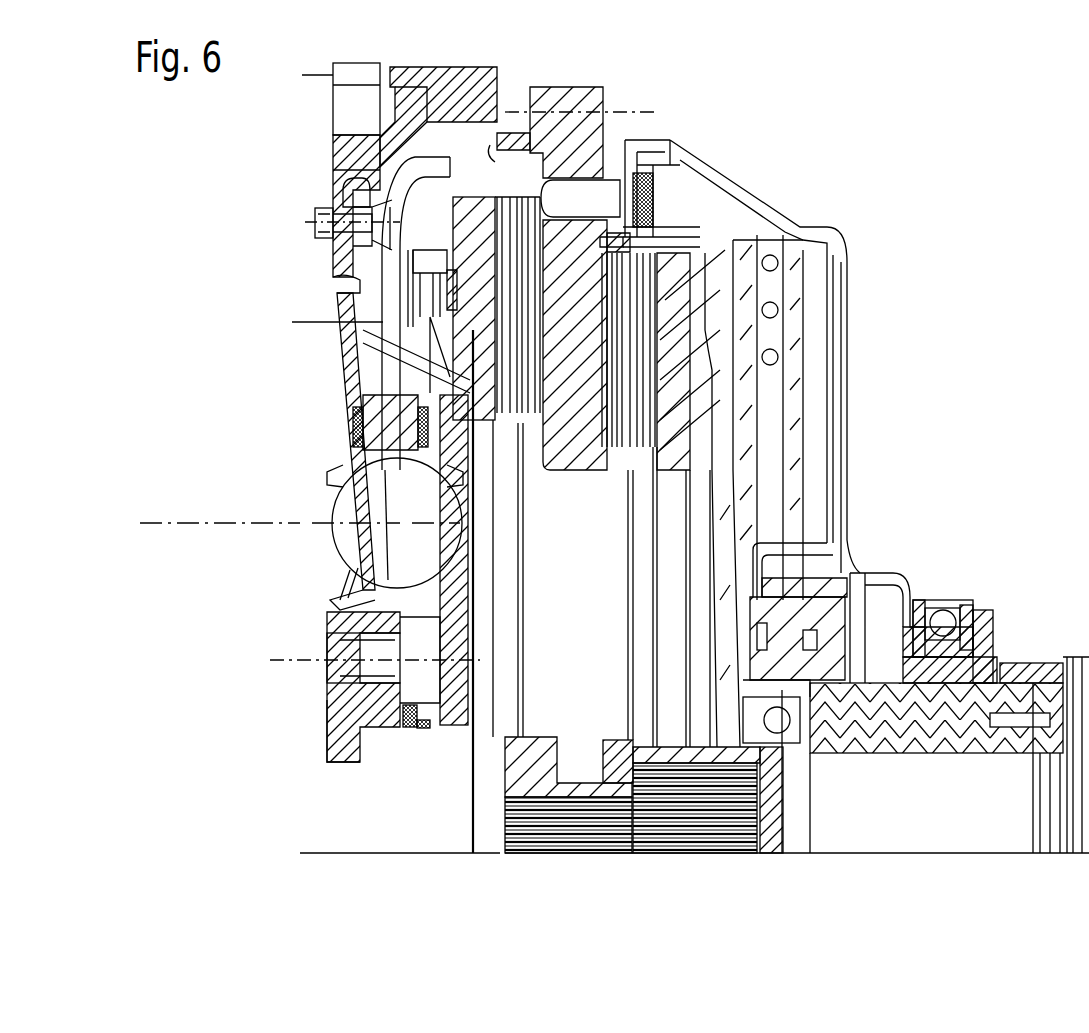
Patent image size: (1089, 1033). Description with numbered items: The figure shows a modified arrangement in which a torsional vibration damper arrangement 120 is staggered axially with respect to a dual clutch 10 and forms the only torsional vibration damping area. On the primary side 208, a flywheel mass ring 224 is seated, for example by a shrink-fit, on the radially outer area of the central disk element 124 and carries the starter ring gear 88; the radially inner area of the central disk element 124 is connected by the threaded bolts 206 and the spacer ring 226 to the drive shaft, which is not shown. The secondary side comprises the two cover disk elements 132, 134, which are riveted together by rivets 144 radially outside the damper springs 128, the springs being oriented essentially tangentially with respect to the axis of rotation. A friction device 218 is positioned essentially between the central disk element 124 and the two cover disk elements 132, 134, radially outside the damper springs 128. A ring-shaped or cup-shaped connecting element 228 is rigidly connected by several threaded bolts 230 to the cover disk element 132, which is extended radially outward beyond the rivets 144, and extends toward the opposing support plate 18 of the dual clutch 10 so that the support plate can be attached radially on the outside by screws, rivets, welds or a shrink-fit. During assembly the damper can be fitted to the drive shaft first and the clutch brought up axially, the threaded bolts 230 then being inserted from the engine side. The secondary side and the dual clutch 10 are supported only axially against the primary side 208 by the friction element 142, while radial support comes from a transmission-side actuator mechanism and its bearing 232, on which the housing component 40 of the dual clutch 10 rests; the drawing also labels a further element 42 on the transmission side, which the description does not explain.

The dual clutch 10 is at (825, 210).
The opposing support plate 18 is at (597, 373).
The housing component 40 is at (785, 393).
The bearing 42 is at (1018, 598).
The starter ring gear 88 is at (347, 102).
The torsional vibration damper arrangement 120 is at (240, 292).
The central disk element 124 is at (375, 490).
The damper springs 128 is at (330, 537).
The cover disk element 132 is at (330, 582).
The cover disk element 134 is at (327, 652).
The friction element 142 is at (400, 733).
The rivets 144 is at (335, 325).
The threaded bolts 206 is at (343, 667).
The primary side 208 is at (285, 612).
The friction device 218 is at (322, 426).
The flywheel mass ring 224 is at (347, 157).
The spacer ring 226 is at (330, 730).
The connecting element 228 is at (500, 167).
The threaded bolts 230 is at (315, 222).
The bearing 232 is at (848, 567).